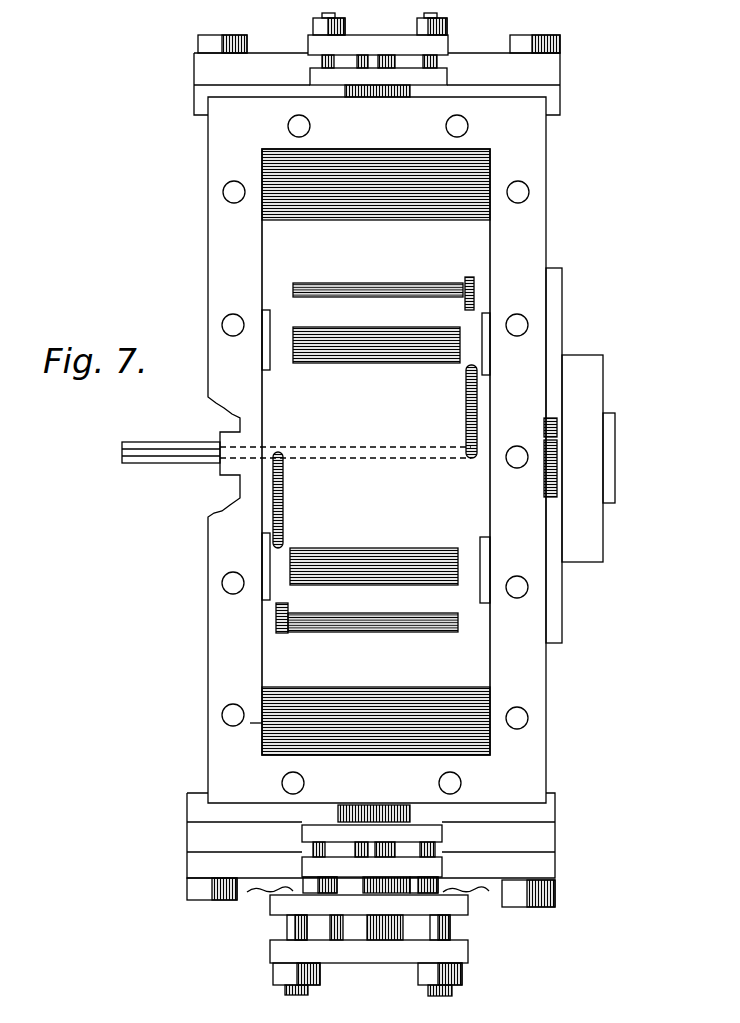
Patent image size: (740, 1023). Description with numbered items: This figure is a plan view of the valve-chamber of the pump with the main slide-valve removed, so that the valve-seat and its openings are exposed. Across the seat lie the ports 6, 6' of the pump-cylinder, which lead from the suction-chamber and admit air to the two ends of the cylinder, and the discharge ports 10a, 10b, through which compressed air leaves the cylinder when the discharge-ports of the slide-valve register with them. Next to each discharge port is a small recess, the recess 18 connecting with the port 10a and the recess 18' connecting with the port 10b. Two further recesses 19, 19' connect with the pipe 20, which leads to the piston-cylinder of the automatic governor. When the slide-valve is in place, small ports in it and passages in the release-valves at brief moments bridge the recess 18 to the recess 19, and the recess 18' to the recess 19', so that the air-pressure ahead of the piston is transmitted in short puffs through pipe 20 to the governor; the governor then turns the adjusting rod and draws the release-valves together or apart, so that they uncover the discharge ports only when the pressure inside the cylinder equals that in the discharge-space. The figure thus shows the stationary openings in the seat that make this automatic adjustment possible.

The port 10a is at (349, 290).
The recess 18 is at (492, 289).
The port 6 is at (376, 357).
The recess 19 is at (444, 411).
The pipe 20 is at (144, 449).
The recess 19' is at (303, 500).
The port 6' is at (374, 551).
The recess 18' is at (249, 629).
The port 10b is at (422, 627).